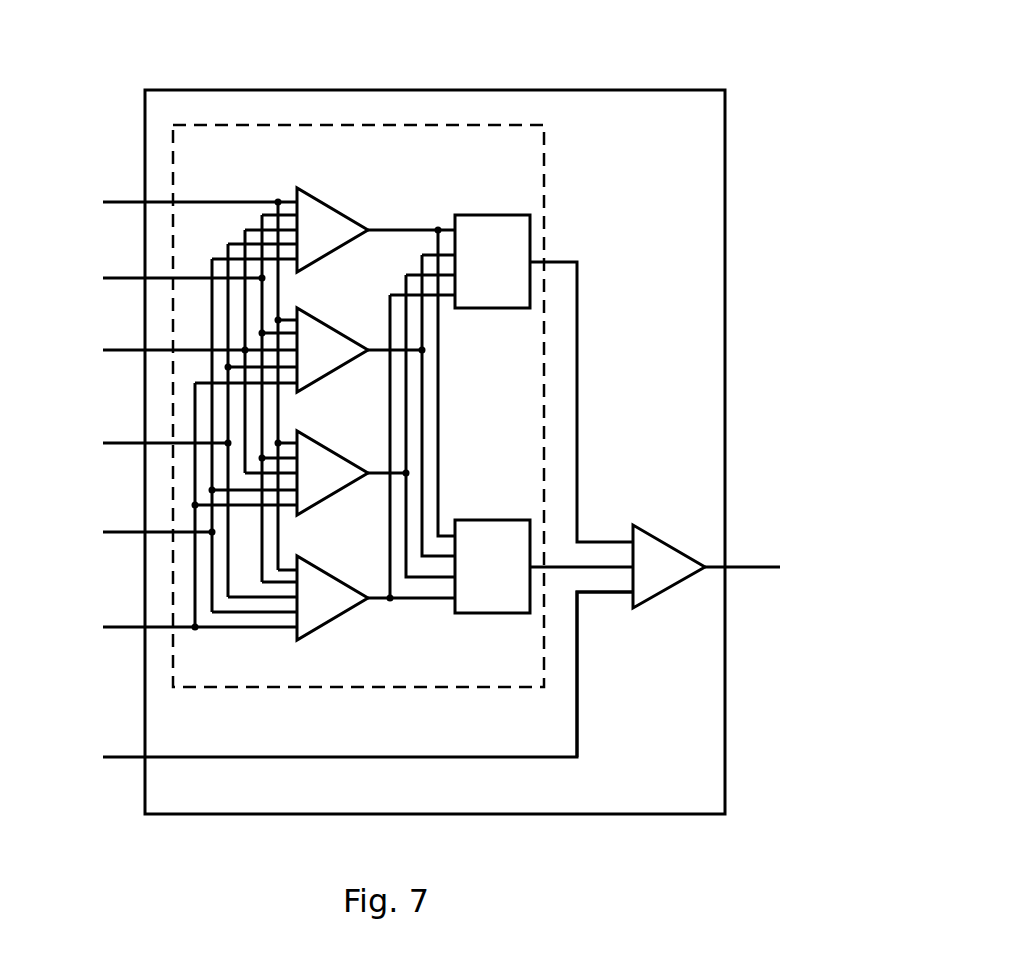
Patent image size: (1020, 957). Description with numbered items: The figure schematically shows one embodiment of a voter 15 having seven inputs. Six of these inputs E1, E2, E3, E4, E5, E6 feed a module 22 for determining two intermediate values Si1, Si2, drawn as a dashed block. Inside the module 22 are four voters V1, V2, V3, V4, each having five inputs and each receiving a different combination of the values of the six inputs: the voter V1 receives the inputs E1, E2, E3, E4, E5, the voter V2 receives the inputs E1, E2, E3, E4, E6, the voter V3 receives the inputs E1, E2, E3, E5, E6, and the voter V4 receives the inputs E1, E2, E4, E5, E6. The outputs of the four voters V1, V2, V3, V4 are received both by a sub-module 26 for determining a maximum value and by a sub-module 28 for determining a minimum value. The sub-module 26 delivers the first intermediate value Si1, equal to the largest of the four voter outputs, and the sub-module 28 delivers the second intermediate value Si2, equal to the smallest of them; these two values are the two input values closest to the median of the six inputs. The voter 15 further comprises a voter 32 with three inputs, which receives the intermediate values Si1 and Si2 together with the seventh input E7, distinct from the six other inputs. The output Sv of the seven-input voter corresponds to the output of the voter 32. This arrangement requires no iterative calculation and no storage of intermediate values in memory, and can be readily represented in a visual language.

The voter 15 is at (222, 90).
The module for determining two intermediate values 22 is at (310, 125).
The sub-module for determining a maximum value 26 is at (490, 215).
The sub-module for determining a minimum value 28 is at (495, 520).
The voter with 3 inputs 32 is at (663, 540).
The voter V1 is at (318, 200).
The voter V2 is at (318, 322).
The voter V3 is at (318, 443).
The voter V4 is at (318, 568).
The first intermediate value Si1 is at (560, 262).
The second intermediate value Si2 is at (608, 592).
The input E1 is at (166, 202).
The input E2 is at (149, 278).
The input E3 is at (166, 350).
The input E4 is at (132, 443).
The input E5 is at (124, 532).
The input E6 is at (166, 627).
The seventh input E7 is at (334, 684).
The output Sv is at (812, 569).